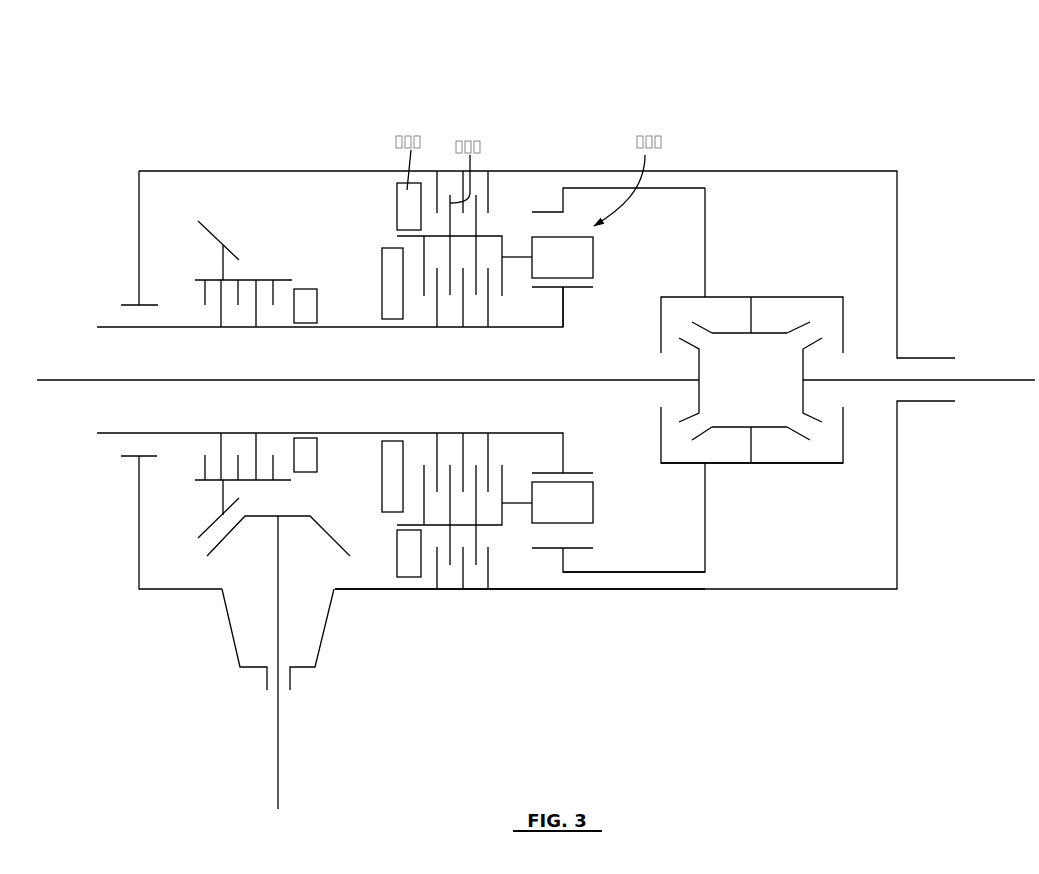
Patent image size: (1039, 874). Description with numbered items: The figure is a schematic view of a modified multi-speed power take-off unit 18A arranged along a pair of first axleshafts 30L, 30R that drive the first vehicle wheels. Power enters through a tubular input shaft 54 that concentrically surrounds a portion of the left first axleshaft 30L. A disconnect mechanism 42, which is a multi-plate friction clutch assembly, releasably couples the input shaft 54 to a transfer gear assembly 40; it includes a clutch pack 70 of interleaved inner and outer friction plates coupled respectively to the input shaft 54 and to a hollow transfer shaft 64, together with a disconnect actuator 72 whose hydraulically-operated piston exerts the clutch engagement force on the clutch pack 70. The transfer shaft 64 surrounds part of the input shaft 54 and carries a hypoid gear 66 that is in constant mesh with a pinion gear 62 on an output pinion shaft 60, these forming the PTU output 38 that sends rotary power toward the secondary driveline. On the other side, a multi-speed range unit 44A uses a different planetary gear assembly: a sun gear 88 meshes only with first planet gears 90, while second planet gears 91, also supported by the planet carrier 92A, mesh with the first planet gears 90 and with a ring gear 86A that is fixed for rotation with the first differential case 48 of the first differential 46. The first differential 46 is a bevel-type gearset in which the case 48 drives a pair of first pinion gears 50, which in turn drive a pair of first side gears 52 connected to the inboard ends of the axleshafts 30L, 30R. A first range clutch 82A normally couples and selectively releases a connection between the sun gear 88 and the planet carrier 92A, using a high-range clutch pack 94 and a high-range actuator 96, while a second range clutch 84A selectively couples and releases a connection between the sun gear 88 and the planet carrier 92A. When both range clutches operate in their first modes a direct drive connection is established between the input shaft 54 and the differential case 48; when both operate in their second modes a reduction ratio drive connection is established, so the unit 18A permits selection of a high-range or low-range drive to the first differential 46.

The power take-off unit 18A is at (903, 106).
The first axleshaft 30L is at (52, 379).
The first axleshaft 30R is at (1008, 379).
The PTU output 38 is at (266, 702).
The transfer gear assembly 40 is at (196, 550).
The disconnect mechanism 42 is at (186, 474).
The multi-speed range unit 44A is at (544, 580).
The first differential 46 is at (809, 380).
The first differential case 48 is at (802, 465).
The first pinion gears 50 is at (773, 333).
The first side gears 52 is at (699, 371).
The input shaft 54 is at (97, 325).
The output pinion shaft 60 is at (279, 734).
The pinion gear 62 is at (225, 538).
The transfer shaft 64 is at (282, 480).
The hypoid gear 66 is at (220, 498).
The clutch pack 70 is at (207, 296).
The disconnect actuator 72 is at (305, 292).
The first range clutch 82A is at (475, 322).
The second range clutch 84A is at (500, 184).
The ring gear 86A is at (705, 243).
The sun gear 88 is at (563, 308).
The first planet gears 90 is at (593, 257).
The second planet gears 91 is at (593, 503).
The planet carrier 92A is at (515, 505).
The high-range clutch pack 94 is at (450, 287).
The high-range actuator 96 is at (383, 262).